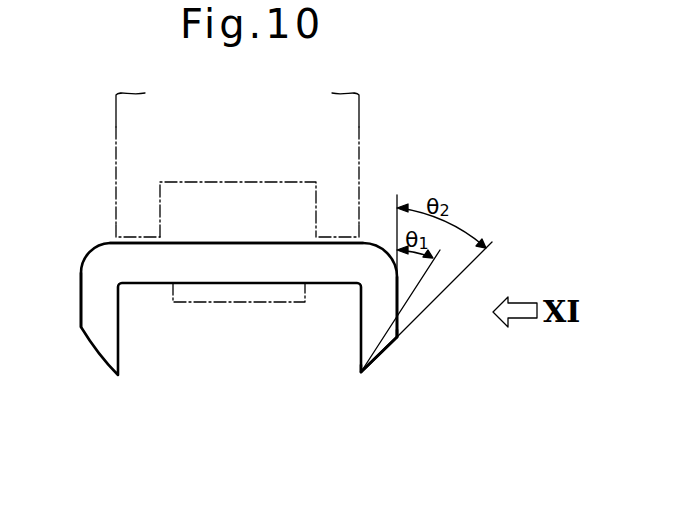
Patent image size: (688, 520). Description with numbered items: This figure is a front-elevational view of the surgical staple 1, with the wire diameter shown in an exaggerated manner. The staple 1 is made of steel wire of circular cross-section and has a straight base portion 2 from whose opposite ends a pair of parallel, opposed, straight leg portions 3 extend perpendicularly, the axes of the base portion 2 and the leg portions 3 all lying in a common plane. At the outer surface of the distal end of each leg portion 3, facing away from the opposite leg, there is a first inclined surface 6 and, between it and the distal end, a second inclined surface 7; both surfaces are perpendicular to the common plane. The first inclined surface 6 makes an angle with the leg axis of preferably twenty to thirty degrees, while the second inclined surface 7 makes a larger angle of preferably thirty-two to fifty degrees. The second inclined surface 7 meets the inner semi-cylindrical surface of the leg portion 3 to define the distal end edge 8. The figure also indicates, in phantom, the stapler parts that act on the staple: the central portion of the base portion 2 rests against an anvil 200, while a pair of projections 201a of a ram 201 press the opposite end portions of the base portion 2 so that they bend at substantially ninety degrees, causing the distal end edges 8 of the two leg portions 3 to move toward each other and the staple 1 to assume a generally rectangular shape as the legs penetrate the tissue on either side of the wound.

The surgical staple 1 is at (343, 239).
The base portion 2 is at (240, 256).
The leg portion 3 is at (92, 308).
The first inclined surface 6 is at (392, 338).
The second inclined surface 7 is at (365, 370).
The distal end edge 8 is at (360, 375).
The anvil 200 is at (235, 305).
The ram 201 is at (360, 109).
The projection 201a is at (116, 222).